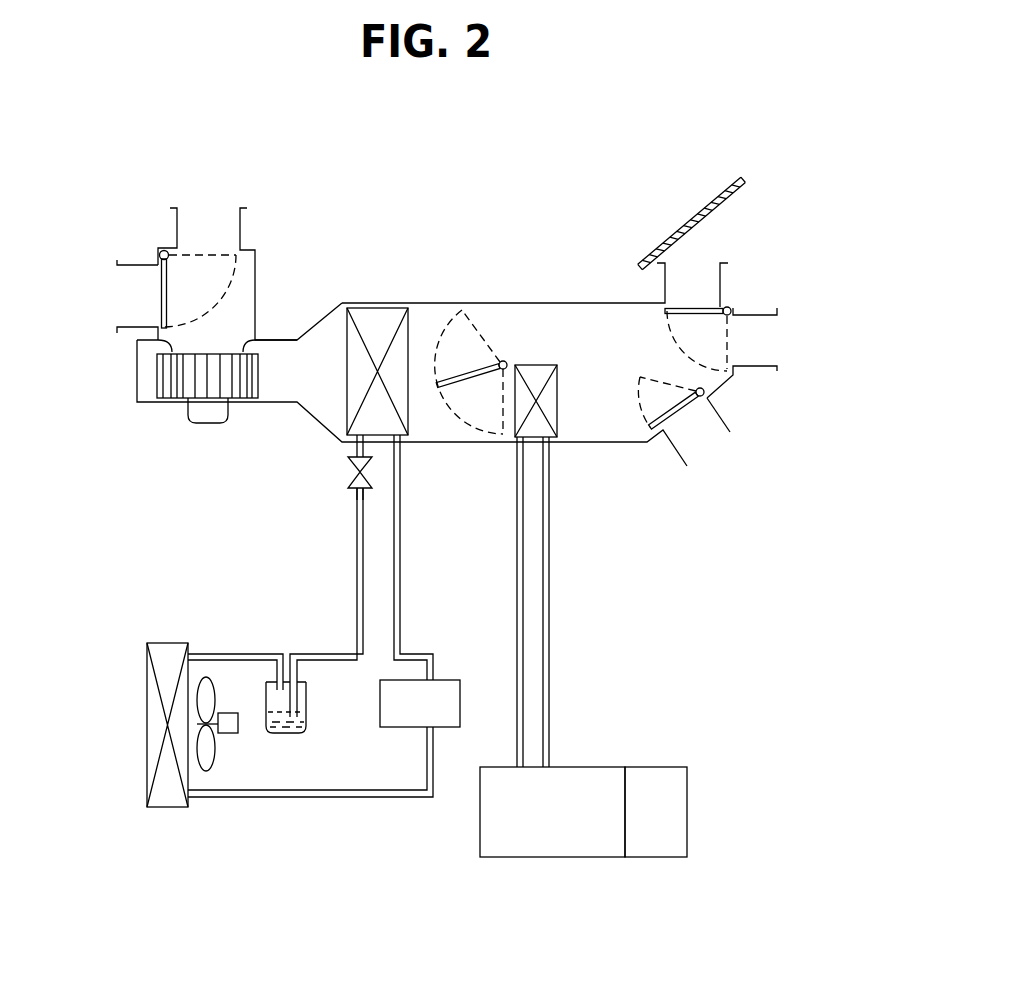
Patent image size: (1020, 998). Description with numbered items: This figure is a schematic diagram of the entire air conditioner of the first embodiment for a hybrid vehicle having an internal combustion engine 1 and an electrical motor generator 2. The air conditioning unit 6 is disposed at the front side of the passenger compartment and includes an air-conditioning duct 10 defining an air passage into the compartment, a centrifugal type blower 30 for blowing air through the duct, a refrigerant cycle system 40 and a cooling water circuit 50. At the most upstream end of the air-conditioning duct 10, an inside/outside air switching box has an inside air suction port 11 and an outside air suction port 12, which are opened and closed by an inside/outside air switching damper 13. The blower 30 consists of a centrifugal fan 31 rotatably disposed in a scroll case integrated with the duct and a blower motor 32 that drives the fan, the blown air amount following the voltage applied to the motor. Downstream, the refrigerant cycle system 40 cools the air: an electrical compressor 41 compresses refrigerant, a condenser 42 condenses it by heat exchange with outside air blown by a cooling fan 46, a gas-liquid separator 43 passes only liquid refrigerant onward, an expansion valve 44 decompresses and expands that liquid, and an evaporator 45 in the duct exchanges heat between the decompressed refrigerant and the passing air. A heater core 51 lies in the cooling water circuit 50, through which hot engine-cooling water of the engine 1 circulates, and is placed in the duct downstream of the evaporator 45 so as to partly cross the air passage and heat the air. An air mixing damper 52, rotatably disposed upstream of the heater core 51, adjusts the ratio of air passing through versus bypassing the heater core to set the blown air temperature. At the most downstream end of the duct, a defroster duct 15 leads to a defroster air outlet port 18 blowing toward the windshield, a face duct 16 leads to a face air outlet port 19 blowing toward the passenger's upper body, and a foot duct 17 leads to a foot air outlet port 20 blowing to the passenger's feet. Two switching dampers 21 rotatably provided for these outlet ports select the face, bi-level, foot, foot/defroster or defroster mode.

The internal combustion engine 1 is at (552, 860).
The electrical motor generator 2 is at (660, 860).
The air conditioning unit 6 is at (536, 193).
The air-conditioning duct 10 is at (490, 303).
The inside air suction port 11 is at (125, 287).
The outside air suction port 12 is at (206, 212).
The inside/outside air switching damper 13 is at (160, 308).
The defroster duct 15 is at (665, 283).
The face duct 16 is at (757, 368).
The foot duct 17 is at (733, 418).
The defroster air outlet port 18 is at (690, 273).
The face air outlet port 19 is at (760, 340).
The foot air outlet port 20 is at (695, 443).
The switching dampers 21 is at (697, 305).
The centrifugal type blower 30 is at (169, 445).
The centrifugal fan 31 is at (258, 386).
The blower motor 32 is at (206, 424).
The refrigerant cycle system 40 is at (239, 629).
The electrical compressor 41 is at (400, 730).
The condenser 42 is at (163, 810).
The gas-liquid separator 43 is at (286, 737).
The expansion valve 44 is at (346, 470).
The evaporator 45 is at (372, 308).
The cooling fan 46 is at (206, 772).
The cooling water circuit 50 is at (563, 650).
The heater core 51 is at (560, 406).
The air mixing damper 52 is at (470, 385).